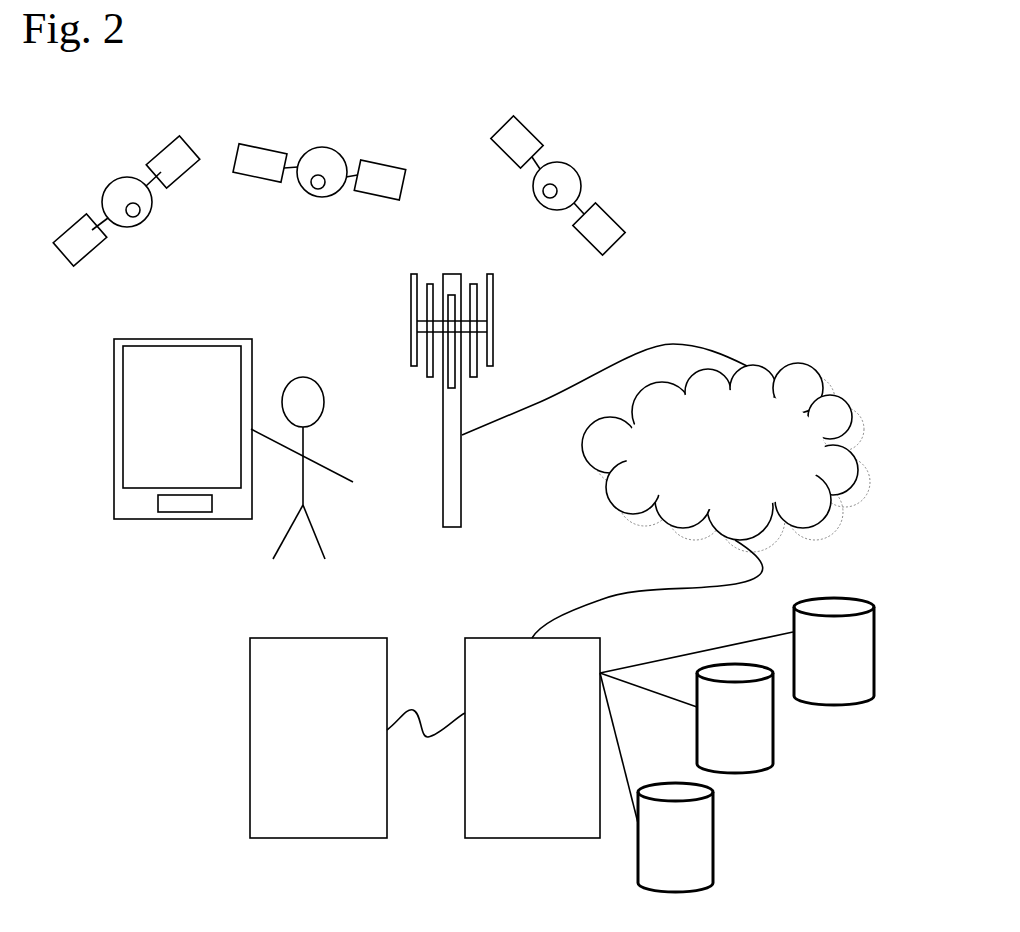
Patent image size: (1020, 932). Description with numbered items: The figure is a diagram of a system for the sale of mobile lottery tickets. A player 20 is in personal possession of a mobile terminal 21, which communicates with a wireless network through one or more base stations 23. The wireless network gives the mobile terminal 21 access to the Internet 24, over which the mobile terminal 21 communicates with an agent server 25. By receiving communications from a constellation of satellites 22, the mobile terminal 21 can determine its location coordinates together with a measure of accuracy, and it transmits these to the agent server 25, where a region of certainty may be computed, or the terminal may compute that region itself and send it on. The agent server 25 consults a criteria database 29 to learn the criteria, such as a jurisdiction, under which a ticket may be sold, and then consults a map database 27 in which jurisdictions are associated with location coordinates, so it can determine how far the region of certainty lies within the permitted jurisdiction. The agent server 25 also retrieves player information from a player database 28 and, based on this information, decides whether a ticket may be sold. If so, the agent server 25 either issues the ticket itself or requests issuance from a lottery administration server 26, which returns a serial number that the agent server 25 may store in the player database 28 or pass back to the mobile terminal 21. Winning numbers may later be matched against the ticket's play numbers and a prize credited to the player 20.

The player 20 is at (329, 547).
The mobile terminal 21 is at (103, 495).
The constellation of satellites 22 is at (622, 248).
The base stations 23 is at (466, 517).
The Internet 24 is at (778, 533).
The agent server 25 is at (573, 845).
The lottery administration server 26 is at (348, 845).
The map database 27 is at (691, 837).
The player database 28 is at (752, 718).
The criteria database 29 is at (852, 651).